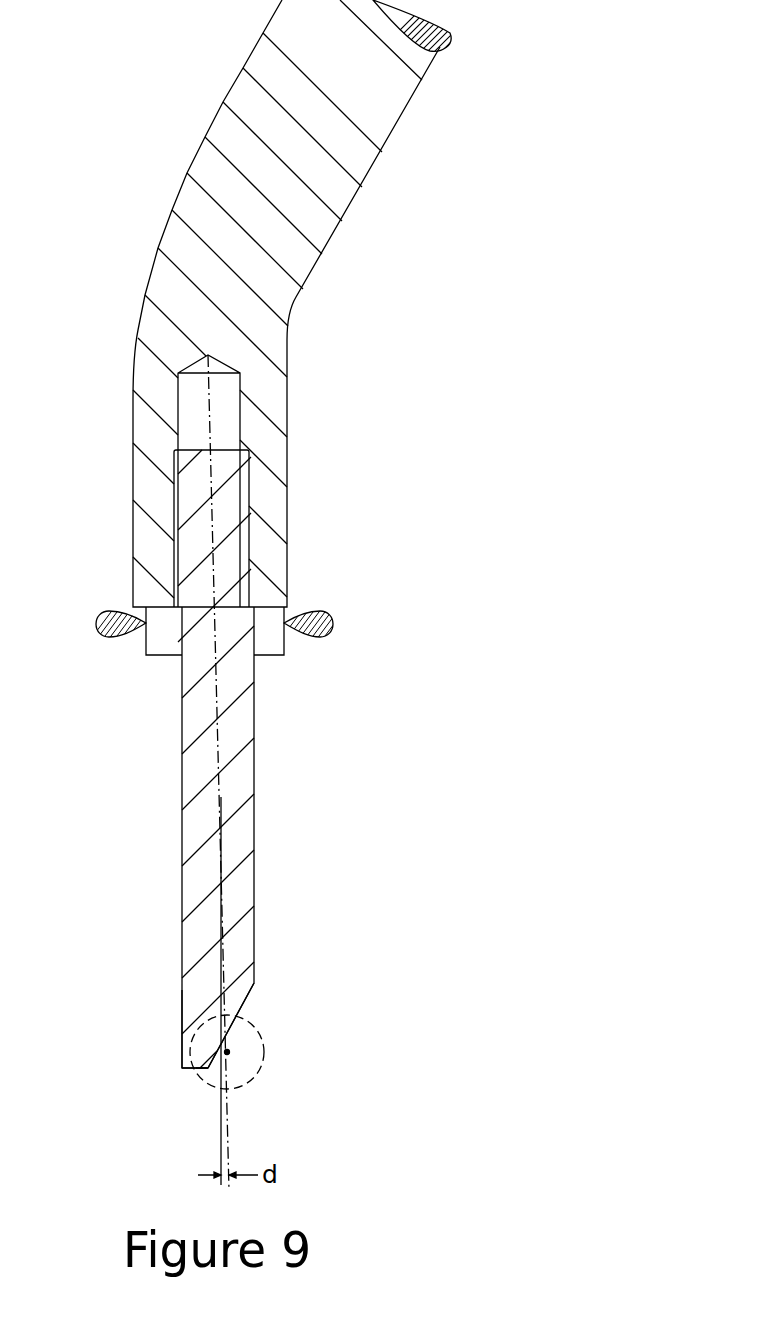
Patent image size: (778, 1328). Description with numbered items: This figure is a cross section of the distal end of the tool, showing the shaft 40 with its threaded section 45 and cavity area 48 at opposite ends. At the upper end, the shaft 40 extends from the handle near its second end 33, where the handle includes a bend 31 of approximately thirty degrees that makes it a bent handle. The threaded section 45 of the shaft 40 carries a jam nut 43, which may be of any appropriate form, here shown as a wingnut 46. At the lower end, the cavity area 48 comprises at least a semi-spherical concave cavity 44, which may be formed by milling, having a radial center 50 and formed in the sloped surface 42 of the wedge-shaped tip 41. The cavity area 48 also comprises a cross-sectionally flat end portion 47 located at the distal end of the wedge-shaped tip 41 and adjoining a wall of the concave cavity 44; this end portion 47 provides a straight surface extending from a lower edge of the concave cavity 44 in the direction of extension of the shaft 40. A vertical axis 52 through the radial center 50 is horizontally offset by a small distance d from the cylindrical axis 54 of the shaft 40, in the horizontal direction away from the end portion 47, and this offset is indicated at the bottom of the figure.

The bend 31 is at (301, 296).
The second end 33 is at (288, 558).
The threaded section 45 is at (248, 493).
The wingnut 46 is at (333, 614).
The jam nut 43 is at (144, 657).
The shaft 40 is at (182, 830).
The cylindrical axis 54 is at (216, 772).
The vertical axis 52 is at (223, 868).
The wedge-shaped tip 41 is at (184, 1017).
The end portion 47 is at (184, 1058).
The sloped surface 42 is at (231, 1033).
The radial center 50 is at (231, 1057).
The semi-spherical concave cavity 44 is at (198, 1032).
The cavity area 48 is at (199, 1068).